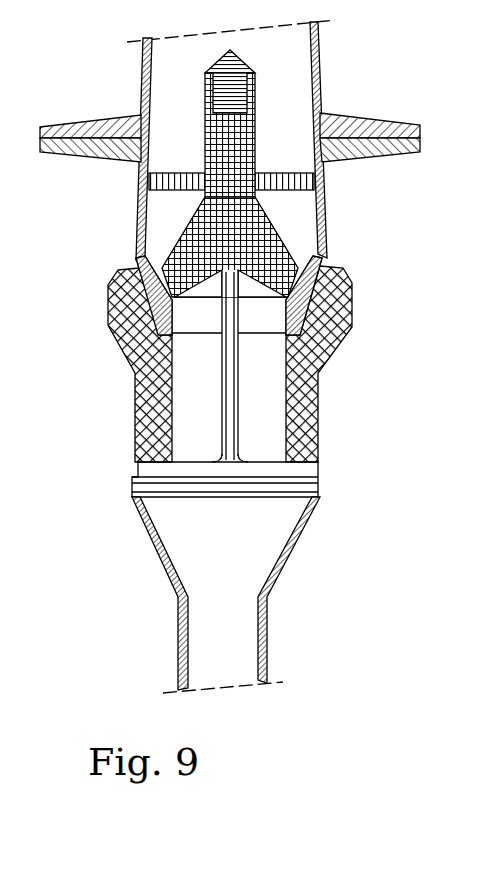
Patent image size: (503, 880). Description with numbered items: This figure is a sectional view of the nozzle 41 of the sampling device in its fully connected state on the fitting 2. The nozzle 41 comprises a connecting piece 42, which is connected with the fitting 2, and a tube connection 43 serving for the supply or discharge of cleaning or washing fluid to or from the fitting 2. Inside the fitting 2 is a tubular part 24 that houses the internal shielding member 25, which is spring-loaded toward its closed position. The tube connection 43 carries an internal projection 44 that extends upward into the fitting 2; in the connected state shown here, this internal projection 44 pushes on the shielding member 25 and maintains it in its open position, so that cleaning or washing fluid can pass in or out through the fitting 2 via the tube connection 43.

The fitting 2 is at (325, 217).
The tubular part 24 is at (177, 215).
The shielding member 25 is at (282, 248).
The nozzle 41 is at (328, 460).
The connecting piece 42 is at (352, 312).
The tube connection 43 is at (288, 553).
The internal projection 44 is at (225, 372).